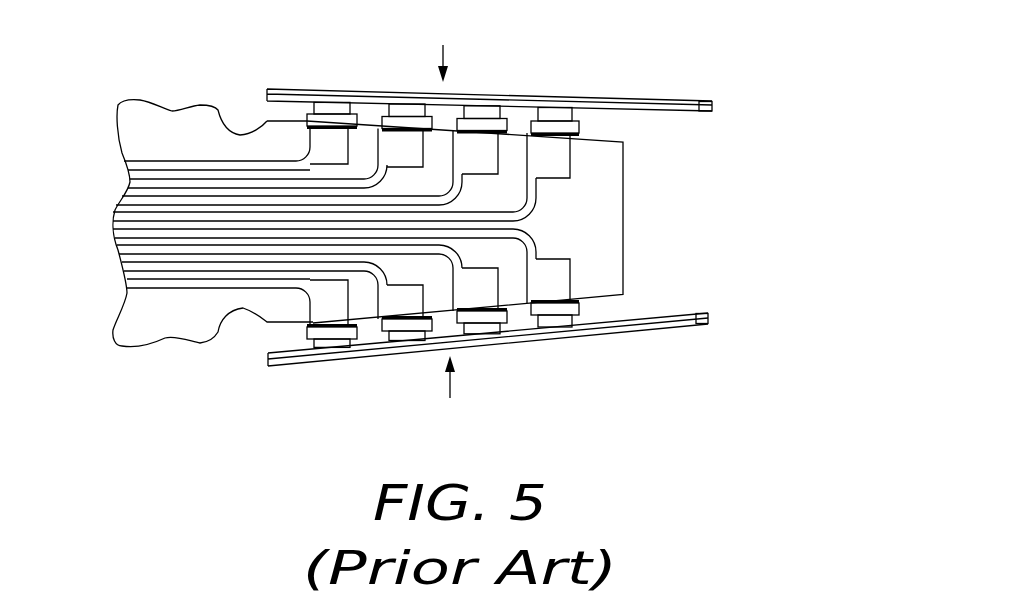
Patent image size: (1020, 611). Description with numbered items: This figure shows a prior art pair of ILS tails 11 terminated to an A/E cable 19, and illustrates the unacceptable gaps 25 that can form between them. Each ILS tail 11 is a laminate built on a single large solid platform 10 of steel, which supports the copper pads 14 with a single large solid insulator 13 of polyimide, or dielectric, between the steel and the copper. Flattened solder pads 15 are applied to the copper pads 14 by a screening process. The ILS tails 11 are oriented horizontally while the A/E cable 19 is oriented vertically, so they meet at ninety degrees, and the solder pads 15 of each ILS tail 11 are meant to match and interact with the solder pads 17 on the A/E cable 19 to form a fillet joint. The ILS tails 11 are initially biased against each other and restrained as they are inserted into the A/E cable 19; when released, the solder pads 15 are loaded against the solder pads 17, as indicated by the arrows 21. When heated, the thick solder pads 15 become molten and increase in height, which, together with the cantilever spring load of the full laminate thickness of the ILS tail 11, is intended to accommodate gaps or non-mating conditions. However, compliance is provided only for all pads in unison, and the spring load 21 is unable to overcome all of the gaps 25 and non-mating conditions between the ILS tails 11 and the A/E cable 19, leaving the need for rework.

The platform 10 is at (514, 93).
The ILS tail 11 is at (539, 217).
The insulator 13 is at (702, 104).
The copper pads 14 is at (574, 115).
The solder pads 15 is at (579, 126).
The solder pads 17 is at (560, 160).
The A/E cable 19 is at (768, 218).
The arrows 21 is at (450, 56).
The gaps 25 is at (604, 133).